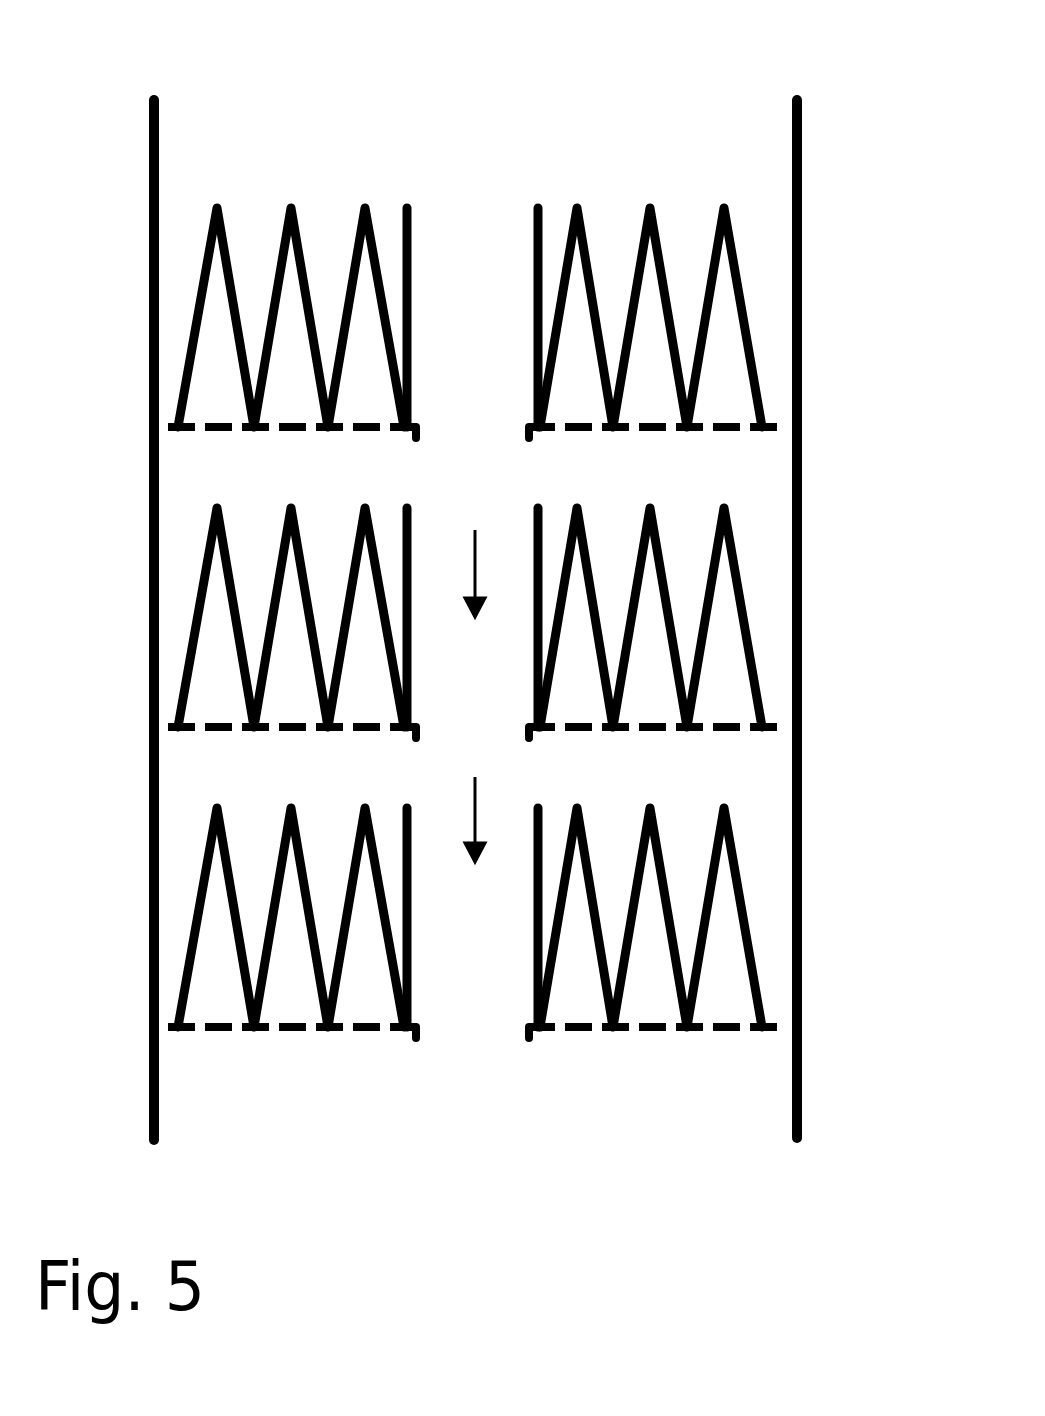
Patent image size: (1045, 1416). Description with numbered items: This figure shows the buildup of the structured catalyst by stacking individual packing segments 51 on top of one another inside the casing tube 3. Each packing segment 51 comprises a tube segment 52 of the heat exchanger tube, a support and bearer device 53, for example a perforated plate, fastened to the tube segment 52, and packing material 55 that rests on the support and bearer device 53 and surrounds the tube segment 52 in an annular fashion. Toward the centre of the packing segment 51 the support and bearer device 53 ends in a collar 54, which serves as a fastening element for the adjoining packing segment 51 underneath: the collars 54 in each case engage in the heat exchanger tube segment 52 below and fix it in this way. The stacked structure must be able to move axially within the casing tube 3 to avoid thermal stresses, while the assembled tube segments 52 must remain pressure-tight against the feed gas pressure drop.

The casing tube 3 is at (803, 967).
The packing segment 51 is at (554, 519).
The tube segment 52 is at (537, 237).
The support and bearer device 53 is at (770, 428).
The collar 54 is at (417, 437).
The packing material 55 is at (748, 305).